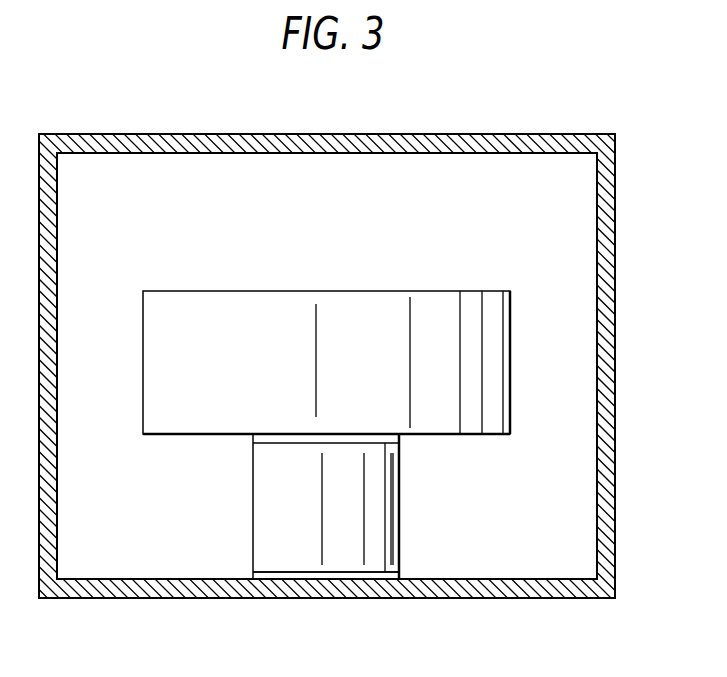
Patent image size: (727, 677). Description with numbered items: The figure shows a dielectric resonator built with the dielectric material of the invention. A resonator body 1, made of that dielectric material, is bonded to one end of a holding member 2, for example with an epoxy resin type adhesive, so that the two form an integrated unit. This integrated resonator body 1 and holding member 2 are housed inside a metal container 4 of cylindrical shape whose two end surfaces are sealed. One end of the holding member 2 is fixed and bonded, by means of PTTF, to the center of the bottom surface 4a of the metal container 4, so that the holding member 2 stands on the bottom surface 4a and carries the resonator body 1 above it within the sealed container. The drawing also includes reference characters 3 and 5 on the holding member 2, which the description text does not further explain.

The resonator body 1 is at (427, 290).
The holding member 2 is at (253, 504).
The lens barrel side wall 3 is at (402, 438).
The metal container 4 is at (390, 134).
The bottom surface 4a is at (521, 599).
The lens barrel bottom 5 is at (315, 572).